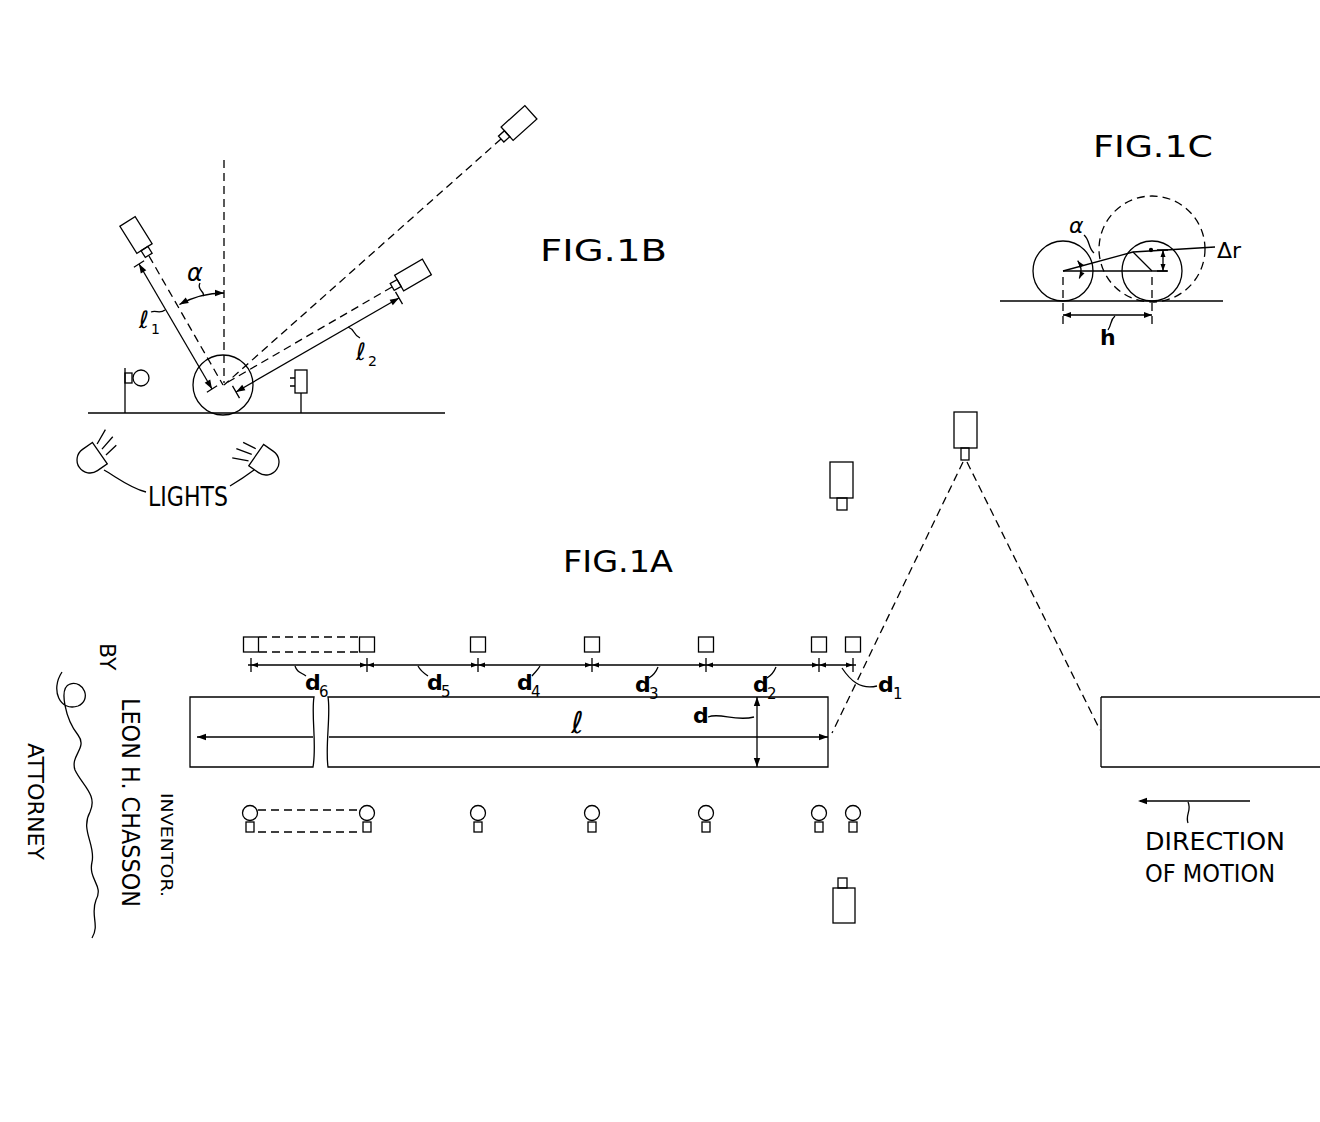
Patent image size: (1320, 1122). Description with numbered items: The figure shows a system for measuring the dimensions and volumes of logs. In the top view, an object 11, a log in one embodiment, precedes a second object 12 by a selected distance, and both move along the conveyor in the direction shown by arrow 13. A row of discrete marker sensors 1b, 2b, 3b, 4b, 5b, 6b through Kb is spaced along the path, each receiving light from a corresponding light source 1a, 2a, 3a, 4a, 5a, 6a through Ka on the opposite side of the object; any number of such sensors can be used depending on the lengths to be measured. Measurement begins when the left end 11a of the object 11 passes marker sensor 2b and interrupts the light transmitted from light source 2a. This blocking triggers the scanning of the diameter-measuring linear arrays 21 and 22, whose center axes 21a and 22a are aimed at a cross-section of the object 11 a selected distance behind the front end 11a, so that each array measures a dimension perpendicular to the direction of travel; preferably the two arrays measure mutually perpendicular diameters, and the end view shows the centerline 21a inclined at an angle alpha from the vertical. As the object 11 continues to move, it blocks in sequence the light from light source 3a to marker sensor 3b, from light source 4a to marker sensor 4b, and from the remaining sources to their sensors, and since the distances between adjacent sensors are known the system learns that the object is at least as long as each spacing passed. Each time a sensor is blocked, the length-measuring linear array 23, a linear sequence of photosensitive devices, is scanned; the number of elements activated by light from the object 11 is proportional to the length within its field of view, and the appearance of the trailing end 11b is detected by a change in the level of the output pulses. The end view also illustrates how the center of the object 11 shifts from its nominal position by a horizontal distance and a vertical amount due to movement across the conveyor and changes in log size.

In FIG. 1B, the object 11 is at (229, 362).
In FIG. 1A, the object 11 is at (532, 735).
In FIG. 1A, the left end of object 11a is at (190, 715).
In FIG. 1A, the end of object 11b is at (829, 754).
In FIG. 1A, the object 12 is at (1243, 697).
In FIG. 1A, the arrow 13 is at (1225, 801).
In FIG. 1B, the linear array 21 is at (140, 217).
In FIG. 1A, the linear array 21 is at (855, 916).
In FIG. 1B, the center axis of linear array 21 21a is at (147, 279).
In FIG. 1B, the linear array 22 is at (422, 284).
In FIG. 1A, the linear array 22 is at (842, 470).
In FIG. 1B, the center axis of linear array 22 22a is at (380, 311).
In FIG. 1B, the linear array 23 is at (504, 124).
In FIG. 1A, the linear array 23 is at (977, 433).
In FIG. 1B, the light source 1a is at (146, 371).
In FIG. 1A, the light source 1a is at (858, 833).
In FIG. 1A, the light source 2a is at (816, 833).
In FIG. 1A, the light source 3a is at (703, 833).
In FIG. 1A, the light source 4a is at (589, 833).
In FIG. 1A, the light source 5a is at (475, 833).
In FIG. 1A, the light source 6a is at (364, 833).
In FIG. 1A, the light source Ka is at (247, 833).
In FIG. 1B, the marker sensor 1b is at (307, 376).
In FIG. 1A, the marker sensor 1b is at (853, 636).
In FIG. 1A, the marker sensor 2b is at (819, 636).
In FIG. 1A, the marker sensor 3b is at (706, 636).
In FIG. 1A, the marker sensor 4b is at (592, 636).
In FIG. 1A, the marker sensor 5b is at (478, 636).
In FIG. 1A, the marker sensor 6b is at (367, 636).
In FIG. 1A, the marker sensor Kb is at (252, 636).